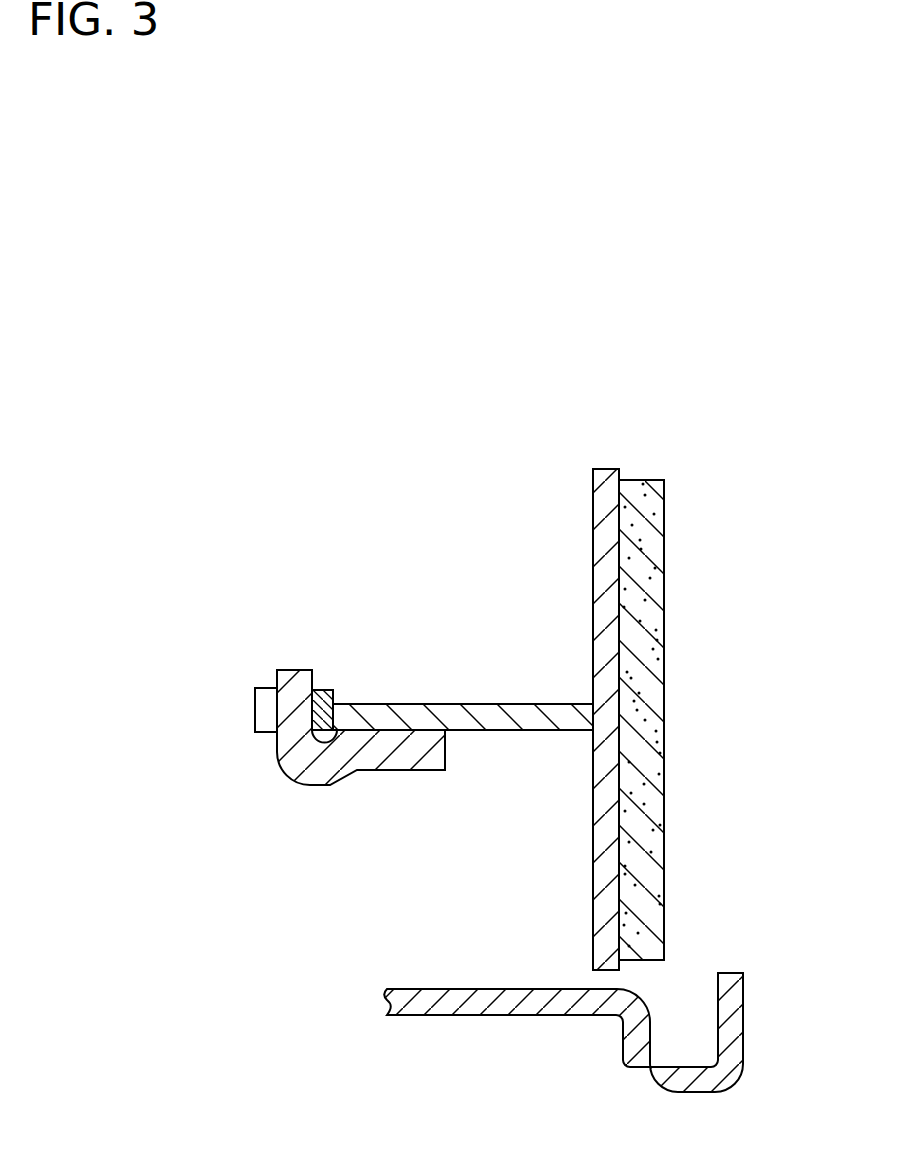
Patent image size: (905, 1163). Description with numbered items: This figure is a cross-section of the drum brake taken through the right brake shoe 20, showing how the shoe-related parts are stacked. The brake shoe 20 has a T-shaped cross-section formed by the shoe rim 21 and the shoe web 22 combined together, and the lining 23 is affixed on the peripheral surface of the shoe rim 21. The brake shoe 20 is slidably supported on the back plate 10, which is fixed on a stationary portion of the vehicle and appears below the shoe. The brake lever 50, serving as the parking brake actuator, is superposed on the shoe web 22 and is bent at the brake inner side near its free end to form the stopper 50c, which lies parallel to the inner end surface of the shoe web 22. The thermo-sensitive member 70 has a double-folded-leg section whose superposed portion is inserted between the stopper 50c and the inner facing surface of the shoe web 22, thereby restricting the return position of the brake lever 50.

The back plate 10 is at (497, 1017).
The brake shoe 20 is at (570, 677).
The shoe rim 21 is at (607, 469).
The shoe web 22 is at (520, 703).
The lining 23 is at (664, 505).
The brake lever 50 is at (336, 710).
The stopper 50c is at (294, 672).
The thermo-sensitive member 70 is at (321, 690).